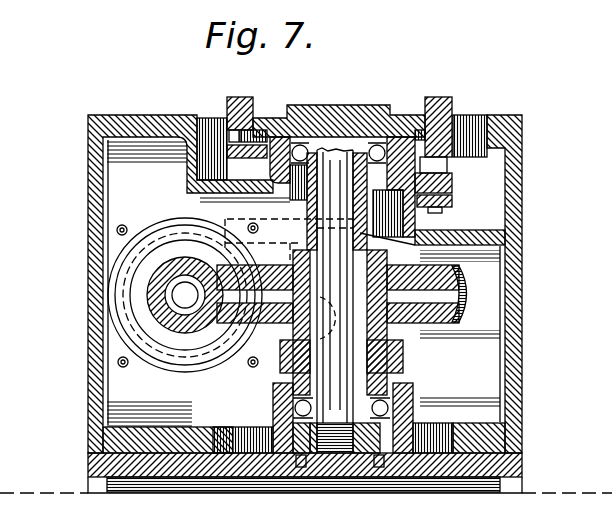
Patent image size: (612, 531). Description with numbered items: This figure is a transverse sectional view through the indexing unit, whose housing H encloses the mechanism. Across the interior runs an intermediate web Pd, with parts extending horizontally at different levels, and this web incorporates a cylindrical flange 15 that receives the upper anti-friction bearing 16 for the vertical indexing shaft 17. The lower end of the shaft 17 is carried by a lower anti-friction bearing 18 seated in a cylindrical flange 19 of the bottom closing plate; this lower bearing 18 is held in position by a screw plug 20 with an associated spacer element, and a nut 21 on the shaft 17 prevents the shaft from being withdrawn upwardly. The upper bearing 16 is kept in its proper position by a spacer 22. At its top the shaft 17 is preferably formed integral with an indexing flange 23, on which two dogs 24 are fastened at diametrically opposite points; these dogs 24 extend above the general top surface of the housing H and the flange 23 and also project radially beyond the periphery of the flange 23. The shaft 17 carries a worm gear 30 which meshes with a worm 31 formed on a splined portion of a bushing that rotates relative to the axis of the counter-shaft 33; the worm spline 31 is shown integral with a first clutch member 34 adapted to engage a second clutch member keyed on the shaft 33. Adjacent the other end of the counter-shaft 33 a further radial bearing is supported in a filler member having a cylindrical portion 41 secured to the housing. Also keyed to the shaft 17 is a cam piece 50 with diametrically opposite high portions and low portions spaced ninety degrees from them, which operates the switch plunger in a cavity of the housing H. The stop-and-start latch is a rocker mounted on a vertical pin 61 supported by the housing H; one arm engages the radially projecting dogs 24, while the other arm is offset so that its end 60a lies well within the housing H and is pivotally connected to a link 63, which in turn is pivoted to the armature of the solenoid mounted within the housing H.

The housing H is at (525, 361).
The intermediate web Pd is at (470, 240).
The indexing flange 23 is at (286, 115).
The dogs 24 is at (228, 100).
The upper anti-friction bearing 16 is at (375, 146).
The cylindrical flange 15 is at (400, 148).
The end of latch rocker 60a is at (440, 182).
The link 63 is at (452, 200).
The spacer 22 is at (362, 186).
The vertical indexing shaft 17 is at (343, 316).
The cam piece 50 is at (283, 370).
The worm 31 is at (165, 312).
The worm gear 30 is at (466, 286).
The cylindrical portion of filler member 41 is at (130, 265).
The first clutch member 34 is at (150, 337).
The counter-shaft 33 is at (185, 290).
The vertical pin 61 is at (225, 204).
The lower anti-friction bearing 18 is at (400, 382).
The cylindrical flange of bottom closing plate 19 is at (400, 413).
The screw plug 20 is at (352, 462).
The nut 21 is at (297, 475).